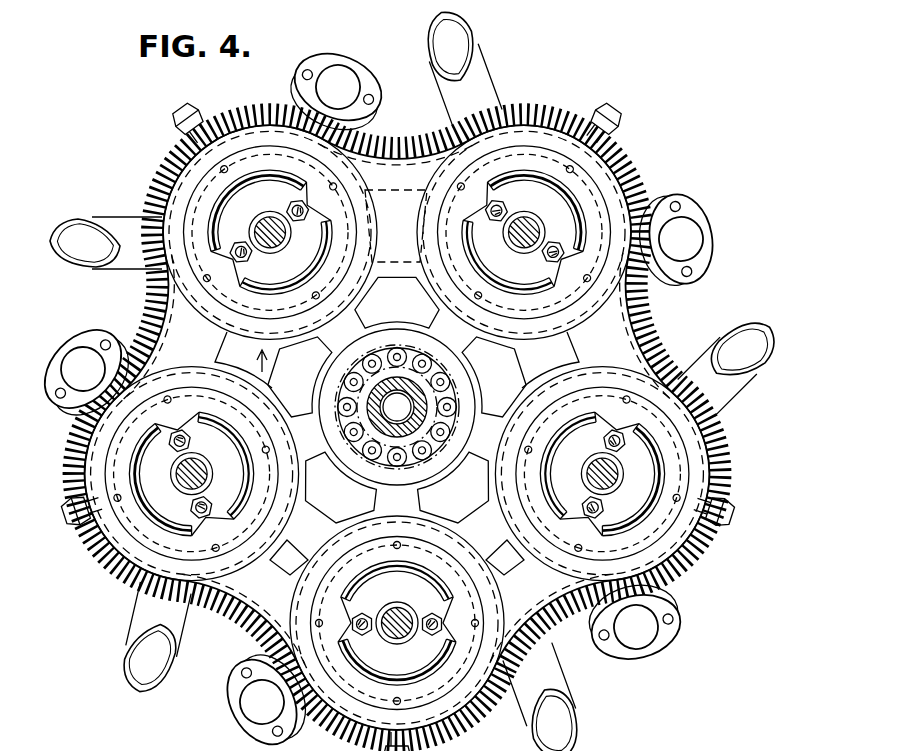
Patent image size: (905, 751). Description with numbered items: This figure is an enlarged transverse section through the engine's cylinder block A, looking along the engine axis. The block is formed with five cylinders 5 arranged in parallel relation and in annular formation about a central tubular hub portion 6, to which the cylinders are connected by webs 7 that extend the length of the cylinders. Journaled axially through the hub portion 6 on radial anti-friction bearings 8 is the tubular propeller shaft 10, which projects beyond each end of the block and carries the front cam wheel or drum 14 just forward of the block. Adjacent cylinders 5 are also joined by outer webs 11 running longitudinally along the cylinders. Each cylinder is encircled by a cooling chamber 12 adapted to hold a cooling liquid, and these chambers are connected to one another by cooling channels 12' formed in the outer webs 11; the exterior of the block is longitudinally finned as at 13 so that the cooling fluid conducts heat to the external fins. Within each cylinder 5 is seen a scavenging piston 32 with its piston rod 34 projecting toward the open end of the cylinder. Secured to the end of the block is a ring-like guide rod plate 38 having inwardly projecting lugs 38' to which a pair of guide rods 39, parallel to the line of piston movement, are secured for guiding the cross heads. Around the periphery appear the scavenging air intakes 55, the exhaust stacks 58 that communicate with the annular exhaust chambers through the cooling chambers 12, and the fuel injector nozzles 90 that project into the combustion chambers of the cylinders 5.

The cylinders 5 is at (262, 116).
The tubular hub portion 6 is at (333, 368).
The webs 7 is at (357, 327).
The radial anti-friction bearings 8 is at (345, 392).
The tubular propeller shaft 10 is at (380, 423).
The outer webs 11 is at (398, 185).
The cooling chamber 12 is at (397, 427).
The cooling channels 12' is at (393, 405).
The cooling fins 13 is at (168, 162).
The front cam wheel or drum 14 is at (400, 270).
The rear or scavenging piston 32 is at (150, 467).
The piston rod 34 is at (262, 220).
The guide rod plate 38 is at (374, 415).
The lugs 38' is at (331, 422).
The guide rods 39 is at (195, 510).
The scavenging air intake 55 is at (330, 62).
The exhaust stack 58 is at (484, 63).
The fuel injector nozzle 90 is at (190, 108).
The cylinder block A is at (627, 153).